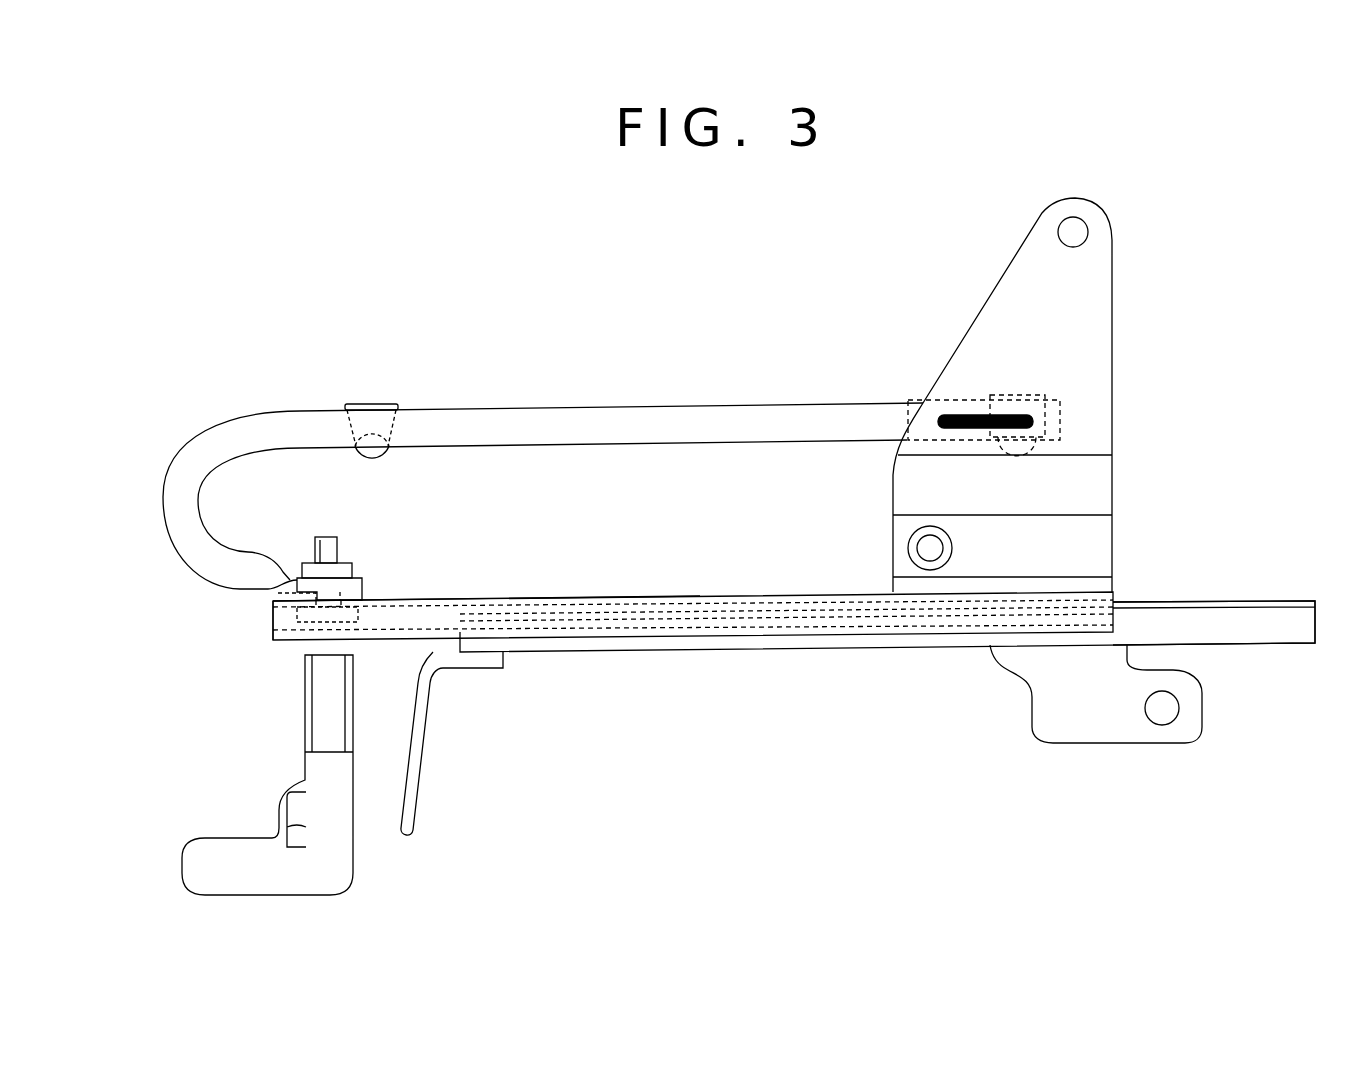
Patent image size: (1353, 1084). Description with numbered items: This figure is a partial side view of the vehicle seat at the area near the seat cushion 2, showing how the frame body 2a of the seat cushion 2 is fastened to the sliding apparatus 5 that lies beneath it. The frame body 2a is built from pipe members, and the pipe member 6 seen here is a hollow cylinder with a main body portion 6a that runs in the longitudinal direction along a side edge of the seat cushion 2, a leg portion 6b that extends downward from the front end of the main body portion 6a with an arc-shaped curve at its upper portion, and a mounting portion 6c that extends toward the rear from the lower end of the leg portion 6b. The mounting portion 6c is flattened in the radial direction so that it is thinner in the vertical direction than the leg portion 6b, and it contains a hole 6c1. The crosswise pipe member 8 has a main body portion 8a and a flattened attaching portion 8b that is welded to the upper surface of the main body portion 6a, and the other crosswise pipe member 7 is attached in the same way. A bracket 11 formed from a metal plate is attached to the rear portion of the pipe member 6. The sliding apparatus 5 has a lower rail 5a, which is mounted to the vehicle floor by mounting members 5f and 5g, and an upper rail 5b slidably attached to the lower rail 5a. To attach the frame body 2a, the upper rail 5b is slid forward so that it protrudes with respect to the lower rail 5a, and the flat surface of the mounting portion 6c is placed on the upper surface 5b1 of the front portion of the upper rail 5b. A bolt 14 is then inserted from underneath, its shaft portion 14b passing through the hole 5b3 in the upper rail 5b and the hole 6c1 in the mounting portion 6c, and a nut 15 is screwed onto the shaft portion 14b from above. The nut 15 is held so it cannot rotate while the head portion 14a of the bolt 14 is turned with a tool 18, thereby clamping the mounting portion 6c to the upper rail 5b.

The seat cushion 2 is at (506, 455).
The frame body 2a is at (609, 385).
The sliding apparatus 5 is at (754, 670).
The lower rail 5a is at (1189, 627).
The upper rail 5b is at (653, 582).
The upper surface of plate portion 5b1 is at (545, 596).
The hole 5b3 is at (273, 626).
The mounting member 5f is at (418, 757).
The mounting member 5g is at (1101, 720).
The pipe member 6 is at (506, 462).
The main body portion 6a is at (486, 432).
The leg portion 6b is at (170, 487).
The mounting portion 6c is at (261, 557).
The hole 6c1 is at (276, 593).
The pipe member 7 is at (1020, 455).
The pipe member 8 is at (367, 421).
The main body portion 8a is at (375, 458).
The attaching portion 8b is at (368, 404).
The bracket 11 is at (1114, 272).
The bolt 14 is at (327, 576).
The head portion 14a is at (295, 638).
The shaft portion 14b is at (326, 545).
The nut 15 is at (359, 571).
The tool 18 is at (357, 878).